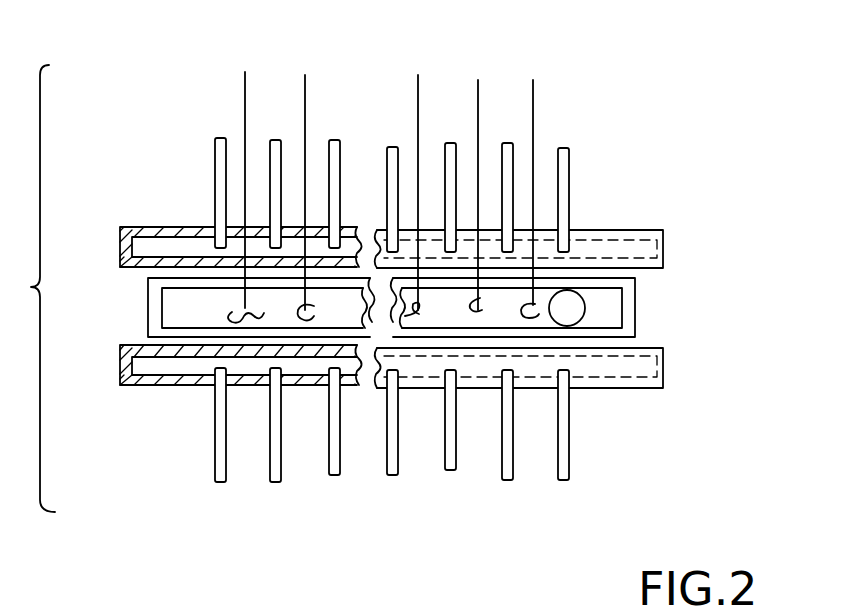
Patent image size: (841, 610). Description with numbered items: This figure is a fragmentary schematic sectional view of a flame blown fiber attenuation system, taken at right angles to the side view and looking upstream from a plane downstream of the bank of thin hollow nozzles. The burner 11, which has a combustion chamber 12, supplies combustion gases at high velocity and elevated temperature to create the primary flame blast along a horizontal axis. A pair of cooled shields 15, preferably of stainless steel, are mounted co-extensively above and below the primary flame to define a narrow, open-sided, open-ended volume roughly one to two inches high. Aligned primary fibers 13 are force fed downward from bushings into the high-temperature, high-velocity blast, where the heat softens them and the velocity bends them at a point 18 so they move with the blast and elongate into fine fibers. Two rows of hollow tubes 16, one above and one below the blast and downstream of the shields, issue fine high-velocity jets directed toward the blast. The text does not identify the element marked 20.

The burner 11 is at (147, 310).
The combustion chamber 12 is at (567, 308).
The primary fibers 13 is at (245, 113).
The cooled shields 15 is at (152, 227).
The hollow tubes 16 is at (215, 168).
The point 18 is at (418, 306).
The connection joint 20 is at (221, 308).